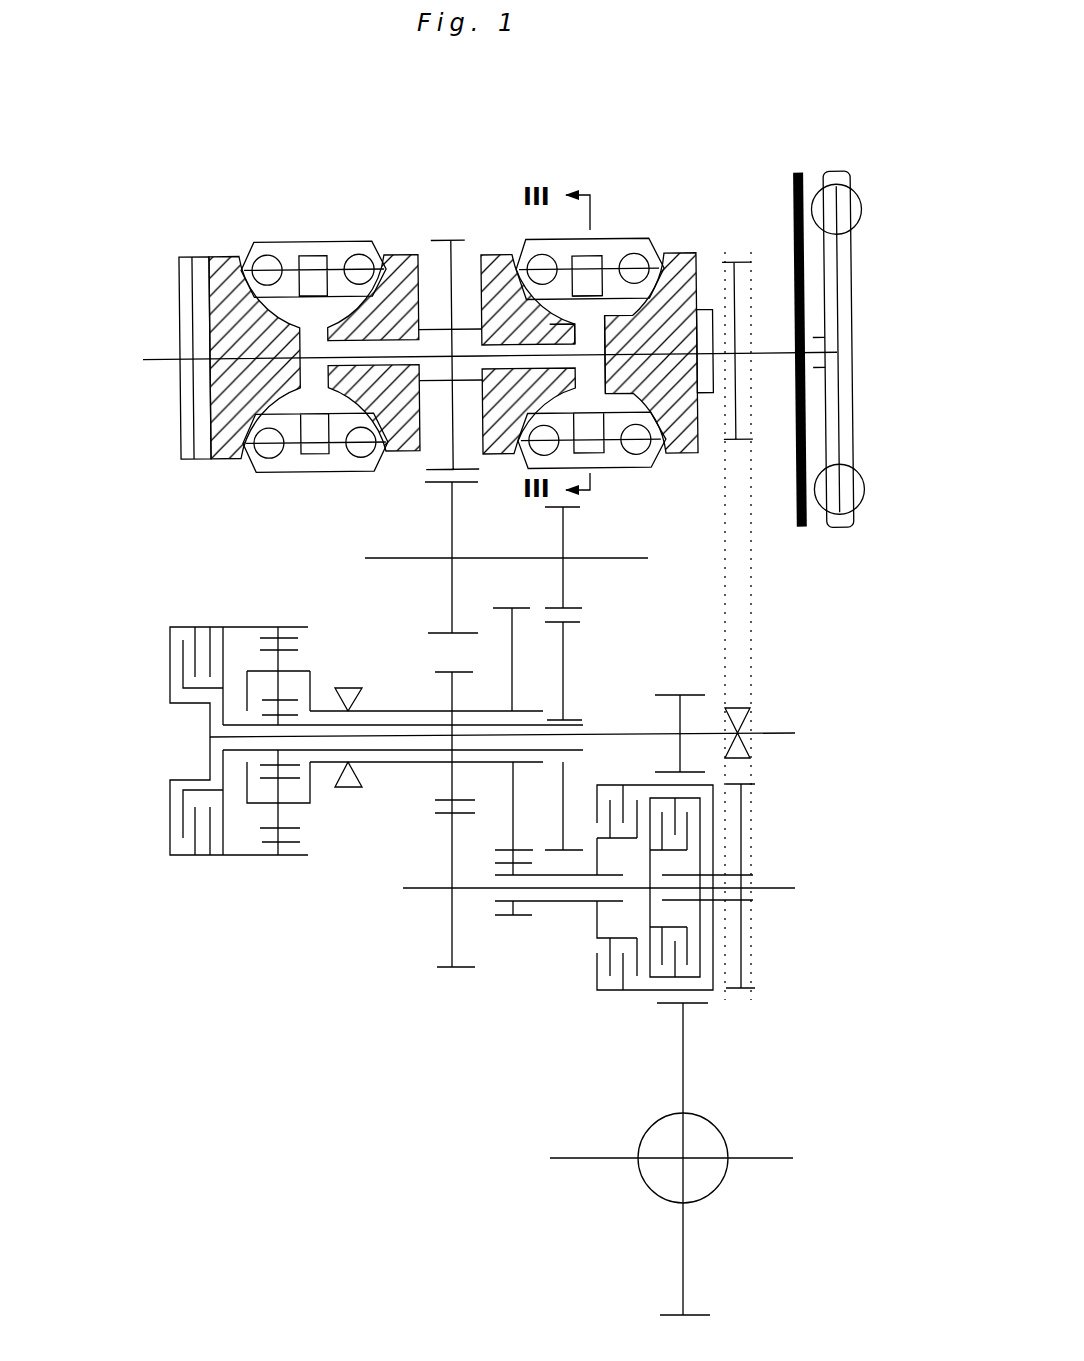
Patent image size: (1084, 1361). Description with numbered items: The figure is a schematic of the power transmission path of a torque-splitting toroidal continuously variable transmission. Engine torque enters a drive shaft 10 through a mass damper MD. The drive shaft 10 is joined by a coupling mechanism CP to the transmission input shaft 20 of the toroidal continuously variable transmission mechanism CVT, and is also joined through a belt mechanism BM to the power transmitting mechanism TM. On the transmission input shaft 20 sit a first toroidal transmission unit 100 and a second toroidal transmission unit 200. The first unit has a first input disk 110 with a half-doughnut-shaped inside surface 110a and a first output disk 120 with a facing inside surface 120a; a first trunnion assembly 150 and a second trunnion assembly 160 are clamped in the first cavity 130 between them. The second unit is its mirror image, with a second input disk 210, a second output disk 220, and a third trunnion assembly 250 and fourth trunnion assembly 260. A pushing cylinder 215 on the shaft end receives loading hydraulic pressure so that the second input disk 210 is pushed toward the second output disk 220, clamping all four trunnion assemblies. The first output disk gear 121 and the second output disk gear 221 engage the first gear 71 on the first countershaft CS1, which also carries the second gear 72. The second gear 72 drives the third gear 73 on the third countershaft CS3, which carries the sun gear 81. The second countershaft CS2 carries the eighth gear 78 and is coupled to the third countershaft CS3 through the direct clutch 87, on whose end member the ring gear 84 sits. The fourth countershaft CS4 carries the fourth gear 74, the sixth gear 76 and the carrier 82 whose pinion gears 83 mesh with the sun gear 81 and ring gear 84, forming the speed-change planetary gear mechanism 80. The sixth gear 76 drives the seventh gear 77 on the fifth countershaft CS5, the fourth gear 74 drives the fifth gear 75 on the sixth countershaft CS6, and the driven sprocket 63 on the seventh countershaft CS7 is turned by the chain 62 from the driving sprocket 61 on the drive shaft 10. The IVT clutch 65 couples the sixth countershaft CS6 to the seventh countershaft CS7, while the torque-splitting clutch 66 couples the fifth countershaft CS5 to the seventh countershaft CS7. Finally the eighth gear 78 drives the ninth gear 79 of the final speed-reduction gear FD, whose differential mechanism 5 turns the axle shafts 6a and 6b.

The differential mechanism 5 is at (713, 1124).
The axle shaft 6a is at (762, 1160).
The axle shaft 6b is at (563, 1158).
The drive shaft 10 is at (760, 352).
The transmission input shaft 20 is at (430, 440).
The driving sprocket 61 is at (741, 262).
The chain 62 is at (762, 622).
The driven sprocket 63 is at (752, 990).
The IVT clutch 65 is at (598, 975).
The torque-splitting clutch 66 is at (685, 950).
The first gear 71 is at (433, 488).
The second gear 72 is at (548, 508).
The third gear 73 is at (576, 622).
The fourth gear 74 is at (498, 607).
The fifth gear 75 is at (520, 918).
The sixth gear 76 is at (449, 672).
The seventh gear 77 is at (464, 968).
The eighth gear 78 is at (679, 694).
The ninth gear 79 is at (661, 1004).
The speed-change planetary gear mechanism 80 is at (230, 873).
The sun gear 81 is at (293, 700).
The carrier 82 is at (316, 800).
The pinion gears 83 is at (298, 647).
The ring gear 84 is at (270, 625).
The direct clutch 87 is at (172, 835).
The first toroidal transmission unit 100 is at (601, 183).
The first input disk 110 is at (678, 252).
The inside surface 110a is at (616, 306).
The first output disk 120 is at (506, 256).
The inside surface 120a is at (560, 300).
The first output disk gear 121 is at (495, 309).
The second output disk gear 221 is at (452, 238).
The first cavity 130 is at (597, 404).
The first trunnion assembly 150 is at (584, 232).
The second trunnion assembly 160 is at (632, 475).
The second toroidal transmission unit 200 is at (351, 161).
The second input disk 210 is at (222, 256).
The pushing cylinder 215 is at (180, 266).
The second output disk 220 is at (402, 256).
The third trunnion assembly 250 is at (322, 237).
The fourth trunnion assembly 260 is at (235, 474).
The toroidal continuously variable transmission mechanism CVT is at (558, 133).
The mass damper MD is at (843, 172).
The belt mechanism BM is at (730, 237).
The coupling mechanism CP is at (703, 396).
The first countershaft CS1 is at (613, 559).
The second countershaft CS2 is at (620, 734).
The third countershaft CS3 is at (380, 764).
The fourth countershaft CS4 is at (380, 710).
The fifth countershaft CS5 is at (413, 890).
The sixth countershaft CS6 is at (558, 903).
The seventh countershaft CS7 is at (735, 872).
The power transmitting mechanism TM is at (322, 982).
The final speed-reduction gear FD is at (606, 1219).